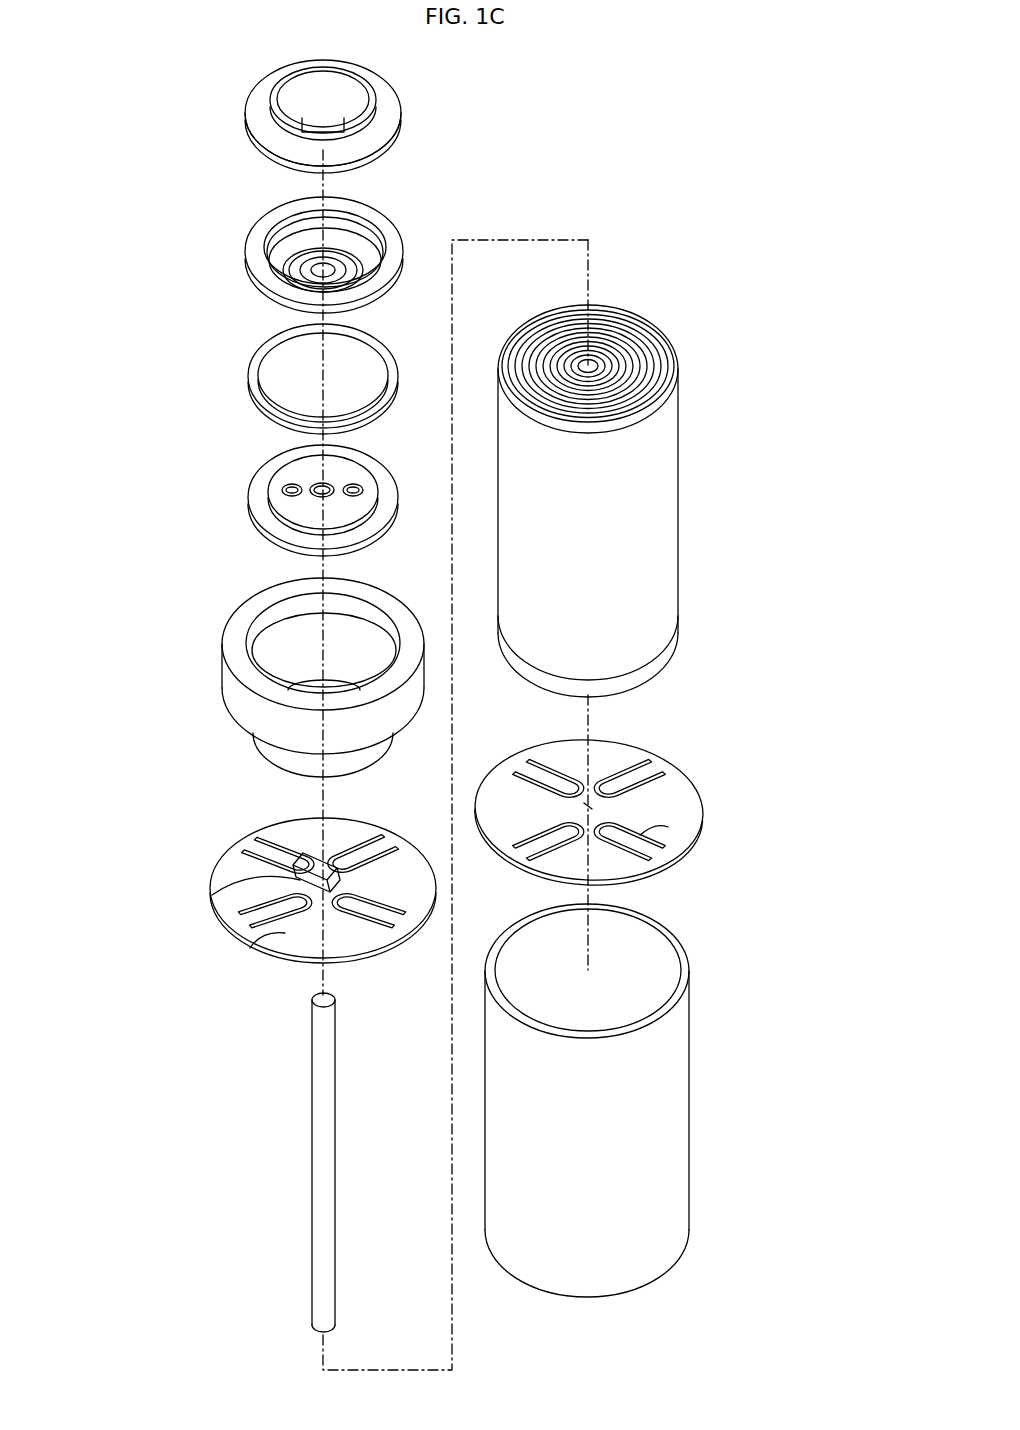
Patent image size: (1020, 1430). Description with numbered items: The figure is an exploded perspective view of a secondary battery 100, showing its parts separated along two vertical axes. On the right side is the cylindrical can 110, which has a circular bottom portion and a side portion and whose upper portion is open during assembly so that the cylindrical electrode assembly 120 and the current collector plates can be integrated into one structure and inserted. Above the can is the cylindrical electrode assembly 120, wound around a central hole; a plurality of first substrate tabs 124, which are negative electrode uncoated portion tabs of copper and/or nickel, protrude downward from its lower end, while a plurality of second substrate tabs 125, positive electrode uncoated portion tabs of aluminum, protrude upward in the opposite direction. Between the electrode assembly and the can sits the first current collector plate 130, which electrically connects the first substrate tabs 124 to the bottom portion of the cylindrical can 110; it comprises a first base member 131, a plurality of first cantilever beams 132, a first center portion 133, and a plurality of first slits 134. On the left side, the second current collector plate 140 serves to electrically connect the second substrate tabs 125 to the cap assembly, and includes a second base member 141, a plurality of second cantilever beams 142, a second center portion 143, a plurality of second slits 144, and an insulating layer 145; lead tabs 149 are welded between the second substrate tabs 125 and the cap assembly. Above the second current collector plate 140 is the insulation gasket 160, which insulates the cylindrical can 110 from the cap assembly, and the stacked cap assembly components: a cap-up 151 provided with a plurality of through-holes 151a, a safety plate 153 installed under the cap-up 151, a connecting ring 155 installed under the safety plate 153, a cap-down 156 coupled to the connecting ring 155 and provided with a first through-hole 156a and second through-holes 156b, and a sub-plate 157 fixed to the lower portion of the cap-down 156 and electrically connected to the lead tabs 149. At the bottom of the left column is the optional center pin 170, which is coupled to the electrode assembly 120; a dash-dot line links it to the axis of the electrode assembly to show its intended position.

The secondary battery 100 is at (716, 128).
The cylindrical can 110 is at (692, 1137).
The cylindrical electrode assembly 120 is at (636, 476).
The first substrate tabs 124 is at (652, 673).
The second substrate tabs 125 is at (576, 302).
The first current collector plate 130 is at (622, 800).
The first base member 131 is at (604, 760).
The first cantilever beams 132 is at (646, 840).
The first center portion 133 is at (598, 807).
The first slits 134 is at (648, 823).
The second current collector plate 140 is at (299, 878).
The second base member 141 is at (284, 836).
The second cantilever beams 142 is at (262, 921).
The second center portion 143 is at (218, 903).
The second slits 144 is at (283, 938).
The insulating layer 145 is at (222, 852).
The lead tabs 149 is at (372, 925).
The cap-up 151 is at (298, 125).
The through-holes 151a is at (312, 132).
The safety plate 153 is at (246, 248).
The connecting ring 155 is at (250, 380).
The cap-down 156 is at (275, 491).
The first through-hole 156a is at (316, 486).
The second through-holes 156b is at (284, 486).
The sub-plate 157 is at (263, 755).
The insulation gasket 160 is at (222, 683).
The center pin 170 is at (318, 1153).